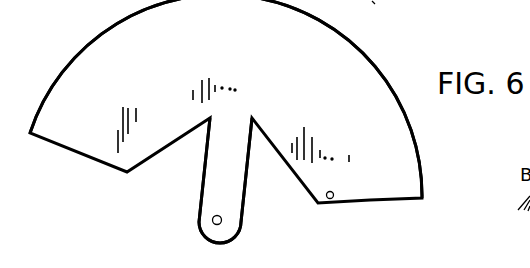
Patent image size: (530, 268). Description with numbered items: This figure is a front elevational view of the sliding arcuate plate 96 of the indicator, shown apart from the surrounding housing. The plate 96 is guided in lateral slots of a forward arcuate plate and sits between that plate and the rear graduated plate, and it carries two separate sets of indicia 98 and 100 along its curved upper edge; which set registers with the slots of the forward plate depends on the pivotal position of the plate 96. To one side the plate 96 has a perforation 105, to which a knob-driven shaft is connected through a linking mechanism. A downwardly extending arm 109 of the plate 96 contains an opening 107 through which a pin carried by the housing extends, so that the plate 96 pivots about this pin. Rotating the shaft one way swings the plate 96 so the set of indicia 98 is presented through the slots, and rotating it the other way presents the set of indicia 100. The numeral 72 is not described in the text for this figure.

The arcuate plate 96 is at (395, 125).
The set of indicia 98 is at (60, 80).
The set of indicia 100 is at (115, 47).
The perforation 105 is at (330, 199).
The opening 107 is at (213, 223).
The downwardly extending arm 109 is at (212, 193).
The shaft 72 is at (384, 11).